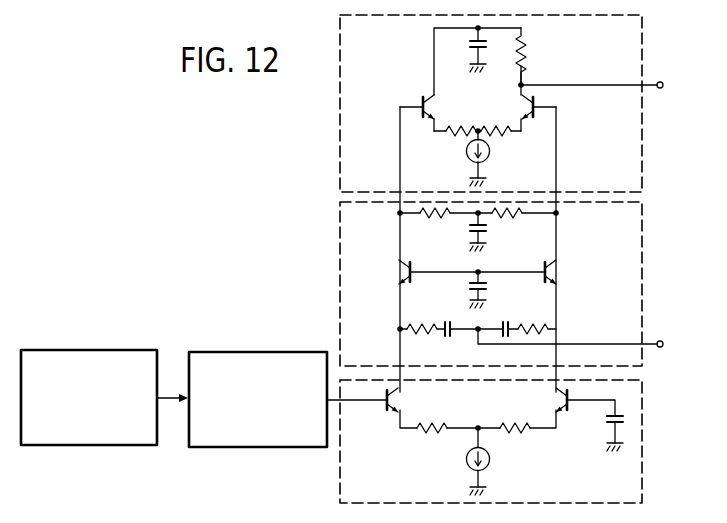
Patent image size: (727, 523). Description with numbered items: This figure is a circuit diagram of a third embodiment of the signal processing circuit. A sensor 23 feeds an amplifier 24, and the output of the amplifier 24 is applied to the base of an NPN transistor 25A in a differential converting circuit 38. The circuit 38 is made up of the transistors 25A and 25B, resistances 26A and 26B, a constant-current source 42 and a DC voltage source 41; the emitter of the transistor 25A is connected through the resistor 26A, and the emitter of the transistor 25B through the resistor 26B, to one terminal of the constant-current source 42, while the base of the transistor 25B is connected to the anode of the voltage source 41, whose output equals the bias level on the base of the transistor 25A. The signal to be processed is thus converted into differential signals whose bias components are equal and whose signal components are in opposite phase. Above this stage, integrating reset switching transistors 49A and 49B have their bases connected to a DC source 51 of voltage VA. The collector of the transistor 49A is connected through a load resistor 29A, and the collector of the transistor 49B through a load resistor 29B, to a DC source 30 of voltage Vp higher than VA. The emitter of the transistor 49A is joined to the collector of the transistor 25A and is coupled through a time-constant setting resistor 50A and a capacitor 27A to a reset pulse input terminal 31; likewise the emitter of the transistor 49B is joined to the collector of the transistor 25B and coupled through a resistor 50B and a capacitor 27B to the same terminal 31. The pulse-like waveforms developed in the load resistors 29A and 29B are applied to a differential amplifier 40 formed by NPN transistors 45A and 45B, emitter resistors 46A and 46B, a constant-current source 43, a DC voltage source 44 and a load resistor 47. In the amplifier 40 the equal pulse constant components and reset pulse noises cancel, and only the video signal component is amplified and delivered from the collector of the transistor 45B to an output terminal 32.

The sensor 23 is at (85, 350).
The amplifier 24 is at (235, 352).
The NPN transistor 25A is at (397, 400).
The NPN transistor 25B is at (552, 399).
The resistance 26A is at (433, 434).
The resistance 26B is at (505, 434).
The capacitor 27A is at (449, 337).
The capacitor 27B is at (505, 321).
The load resistor 29A is at (440, 218).
The load resistor 29B is at (532, 218).
The DC source 30 is at (487, 228).
The reset pulse input terminal 31 is at (659, 343).
The output terminal 32 is at (659, 82).
The differential converting circuit 38 is at (640, 450).
The differential amplifier 40 is at (645, 172).
The DC voltage source 41 is at (607, 416).
The constant-current source 42 is at (489, 466).
The constant-current source 43 is at (468, 155).
The DC voltage source 44 is at (470, 43).
The NPN transistor 45A is at (423, 102).
The NPN transistor 45B is at (533, 110).
The resistor 46A is at (445, 133).
The resistor 46B is at (493, 136).
The resistor 47 is at (525, 47).
The integrating reset switching transistor 49A is at (408, 272).
The integrating reset switching transistor 49B is at (555, 272).
The resistor 50A is at (400, 329).
The resistor 50B is at (554, 326).
The DC source 51 is at (470, 292).